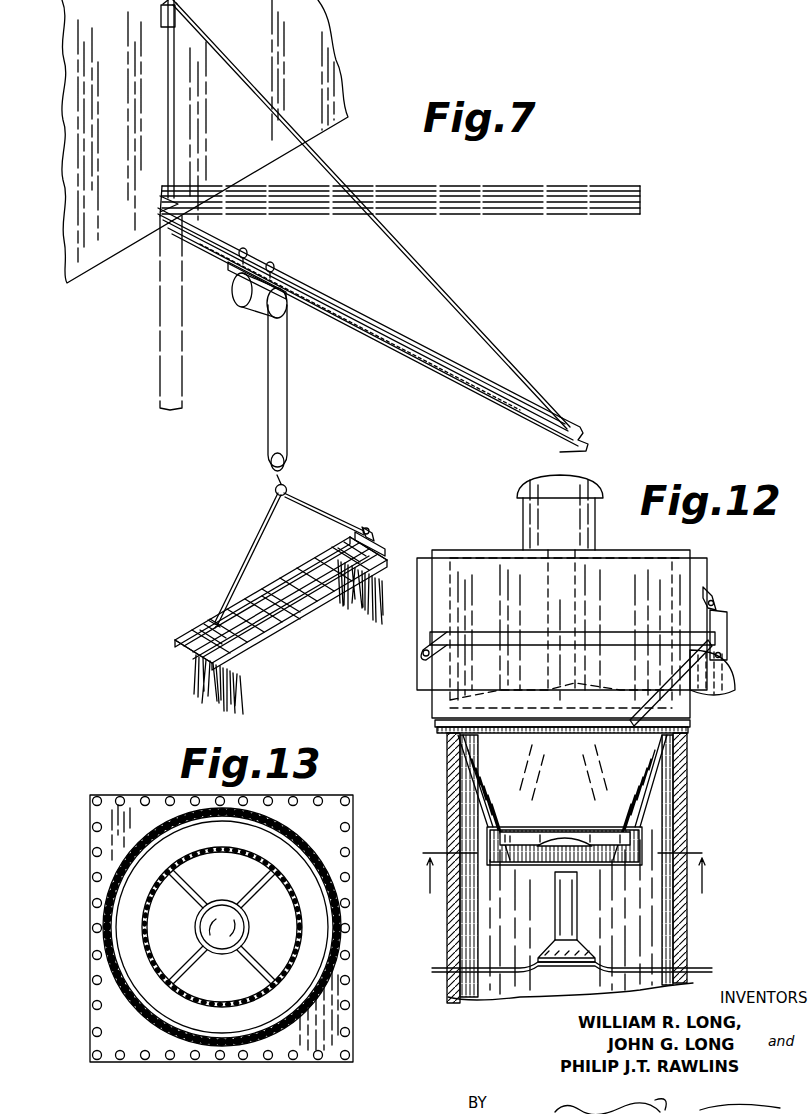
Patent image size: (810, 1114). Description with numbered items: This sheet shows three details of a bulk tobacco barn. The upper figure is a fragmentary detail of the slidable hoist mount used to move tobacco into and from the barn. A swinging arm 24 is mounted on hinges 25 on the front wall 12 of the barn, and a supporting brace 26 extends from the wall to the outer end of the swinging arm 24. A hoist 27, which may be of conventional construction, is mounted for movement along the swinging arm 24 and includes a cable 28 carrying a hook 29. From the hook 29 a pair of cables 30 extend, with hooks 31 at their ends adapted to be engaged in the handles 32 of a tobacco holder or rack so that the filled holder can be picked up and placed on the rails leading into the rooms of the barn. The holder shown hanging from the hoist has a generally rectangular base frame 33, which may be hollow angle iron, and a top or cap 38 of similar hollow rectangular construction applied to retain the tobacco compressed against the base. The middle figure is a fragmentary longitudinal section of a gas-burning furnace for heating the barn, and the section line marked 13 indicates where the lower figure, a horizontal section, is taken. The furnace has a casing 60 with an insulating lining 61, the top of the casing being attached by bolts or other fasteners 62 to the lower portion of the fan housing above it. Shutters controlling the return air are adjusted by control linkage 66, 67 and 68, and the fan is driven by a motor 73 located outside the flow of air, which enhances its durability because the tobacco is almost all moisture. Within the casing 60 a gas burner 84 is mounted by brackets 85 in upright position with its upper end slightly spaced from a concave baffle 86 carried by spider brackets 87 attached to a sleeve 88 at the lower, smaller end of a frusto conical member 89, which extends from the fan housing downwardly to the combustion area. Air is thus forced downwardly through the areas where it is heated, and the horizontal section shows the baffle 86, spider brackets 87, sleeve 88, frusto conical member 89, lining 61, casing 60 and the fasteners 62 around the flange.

In FIG. 7, the front wall 12 is at (332, 50).
In FIG. 7, the hinges 25 is at (162, 12).
In FIG. 7, the swinging arm 24 is at (345, 298).
In FIG. 7, the supporting brace 26 is at (412, 257).
In FIG. 7, the hoist 27 is at (238, 300).
In FIG. 7, the cable 28 is at (289, 372).
In FIG. 7, the hook 29 is at (290, 486).
In FIG. 7, the cables 30 is at (294, 498).
In FIG. 7, the hooks 31 is at (378, 513).
In FIG. 7, the handles 32 is at (380, 542).
In FIG. 7, the frame 33 is at (270, 632).
In FIG. 7, the top or cap 38 is at (325, 568).
In FIG. 12, the motor 73 is at (532, 515).
In FIG. 12, the control linkage 68 is at (643, 612).
In FIG. 12, the control linkage 66 is at (708, 594).
In FIG. 12, the control linkage 67 is at (722, 619).
In FIG. 12, the casing 60 is at (688, 912).
In FIG. 13, the casing 60 is at (332, 985).
In FIG. 12, the insulating lining 61 is at (690, 797).
In FIG. 13, the insulating lining 61 is at (333, 941).
In FIG. 12, the frusto conical member 89 is at (470, 780).
In FIG. 13, the frusto conical member 89 is at (130, 913).
In FIG. 12, the sleeve 88 is at (634, 860).
In FIG. 13, the sleeve 88 is at (200, 850).
In FIG. 12, the spider brackets 87 is at (526, 836).
In FIG. 13, the spider brackets 87 is at (252, 889).
In FIG. 12, the concave baffle 86 is at (571, 838).
In FIG. 13, the concave baffle 86 is at (243, 935).
In FIG. 12, the right side wall 13 is at (569, 878).
In FIG. 12, the gas burner 84 is at (557, 904).
In FIG. 12, the brackets 85 is at (636, 947).
In FIG. 13, the fasteners 62 is at (163, 795).